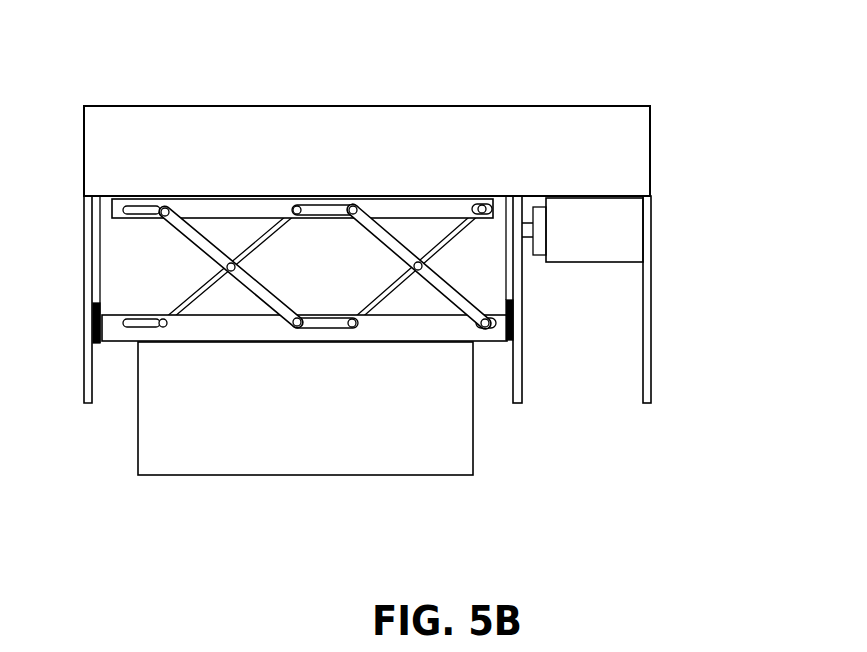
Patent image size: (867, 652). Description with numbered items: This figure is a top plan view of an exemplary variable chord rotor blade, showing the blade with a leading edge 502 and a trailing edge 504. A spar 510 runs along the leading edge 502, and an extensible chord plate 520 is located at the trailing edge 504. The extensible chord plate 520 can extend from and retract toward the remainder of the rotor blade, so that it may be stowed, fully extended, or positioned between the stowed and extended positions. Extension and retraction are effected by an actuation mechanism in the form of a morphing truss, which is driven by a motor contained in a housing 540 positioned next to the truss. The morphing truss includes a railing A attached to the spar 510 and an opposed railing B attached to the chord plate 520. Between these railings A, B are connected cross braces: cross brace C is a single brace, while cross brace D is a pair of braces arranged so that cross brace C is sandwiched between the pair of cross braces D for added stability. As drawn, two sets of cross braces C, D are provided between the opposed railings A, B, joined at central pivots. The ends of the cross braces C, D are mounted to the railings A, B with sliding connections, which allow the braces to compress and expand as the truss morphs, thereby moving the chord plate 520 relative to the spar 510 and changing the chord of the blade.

The leading edge 502 is at (620, 102).
The trailing edge 504 is at (651, 403).
The spar 510 is at (435, 133).
The extensible chord plate 520 is at (408, 447).
The housing 540 is at (607, 243).
The railing A is at (120, 210).
The railing B is at (92, 330).
The cross brace C is at (265, 240).
The cross brace D is at (188, 240).